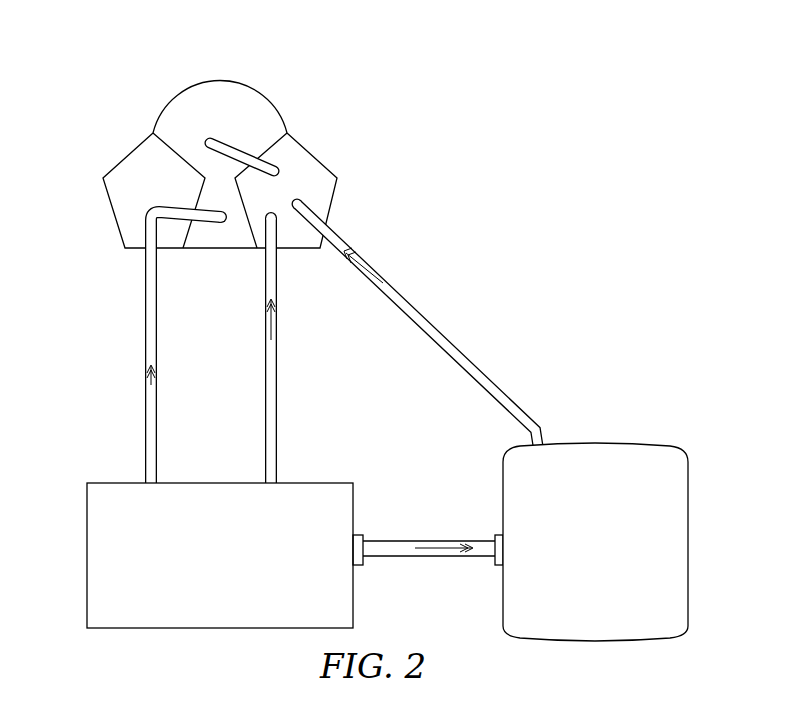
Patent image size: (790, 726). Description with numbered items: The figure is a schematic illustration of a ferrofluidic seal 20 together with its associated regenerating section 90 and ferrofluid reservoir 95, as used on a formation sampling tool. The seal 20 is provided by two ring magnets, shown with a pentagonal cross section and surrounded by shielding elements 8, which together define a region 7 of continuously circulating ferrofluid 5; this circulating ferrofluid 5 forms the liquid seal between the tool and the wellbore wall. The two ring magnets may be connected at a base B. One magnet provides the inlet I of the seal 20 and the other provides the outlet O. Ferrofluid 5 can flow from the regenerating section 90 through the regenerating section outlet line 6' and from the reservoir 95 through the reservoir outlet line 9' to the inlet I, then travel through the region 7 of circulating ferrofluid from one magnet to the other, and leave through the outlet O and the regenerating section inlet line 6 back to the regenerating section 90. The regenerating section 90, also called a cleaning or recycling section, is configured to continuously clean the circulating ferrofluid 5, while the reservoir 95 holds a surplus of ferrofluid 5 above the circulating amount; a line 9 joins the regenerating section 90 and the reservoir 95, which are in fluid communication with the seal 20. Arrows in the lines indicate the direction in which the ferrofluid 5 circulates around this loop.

The ferrofluidic seal 20 is at (225, 156).
The ferrofluid 5 is at (268, 94).
The region of continuously circulating ferrofluid 7 is at (190, 121).
The shielding element 8 is at (235, 190).
The outlet O is at (150, 208).
The inlet I is at (300, 201).
The base B is at (210, 250).
The regenerating section inlet line 6 is at (143, 343).
The regenerating section outlet line 6' is at (303, 347).
The reservoir outlet line 9' is at (415, 321).
The line 9 is at (428, 566).
The regenerating section 90 is at (207, 569).
The ferrofluid reservoir 95 is at (580, 537).